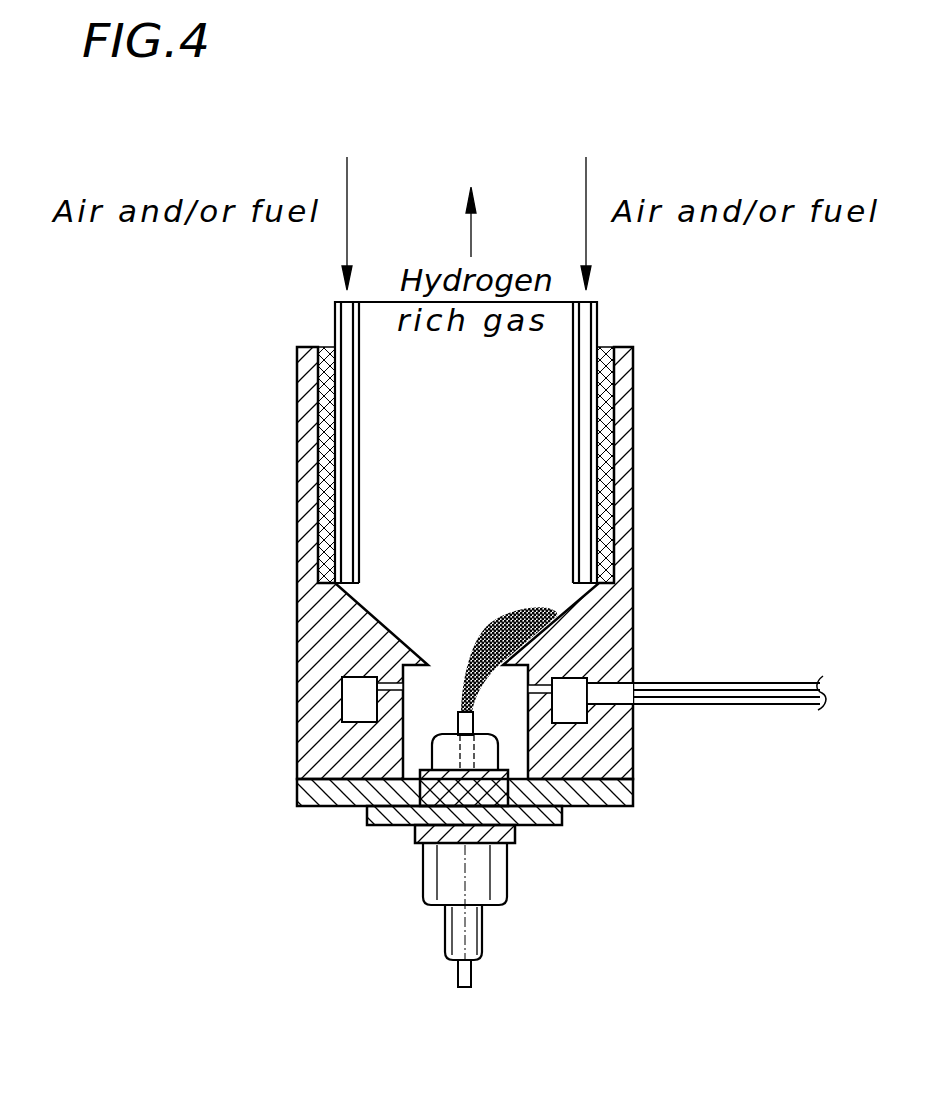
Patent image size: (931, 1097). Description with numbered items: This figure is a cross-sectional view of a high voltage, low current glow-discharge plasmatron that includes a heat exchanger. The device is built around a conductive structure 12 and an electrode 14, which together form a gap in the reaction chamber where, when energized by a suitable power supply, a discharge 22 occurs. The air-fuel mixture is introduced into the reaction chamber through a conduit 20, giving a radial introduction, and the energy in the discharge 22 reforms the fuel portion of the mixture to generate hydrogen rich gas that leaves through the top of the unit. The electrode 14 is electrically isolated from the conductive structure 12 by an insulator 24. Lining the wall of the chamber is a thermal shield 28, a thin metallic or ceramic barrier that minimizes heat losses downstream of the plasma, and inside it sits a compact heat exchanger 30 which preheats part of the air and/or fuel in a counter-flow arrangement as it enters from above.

The conductive structure 12 is at (316, 673).
The electrode 14 is at (455, 972).
The conduit 20 is at (760, 683).
The discharge 22 is at (503, 612).
The insulator 24 is at (492, 863).
The thermal shield 28 is at (321, 421).
The compact heat exchanger 30 is at (361, 403).